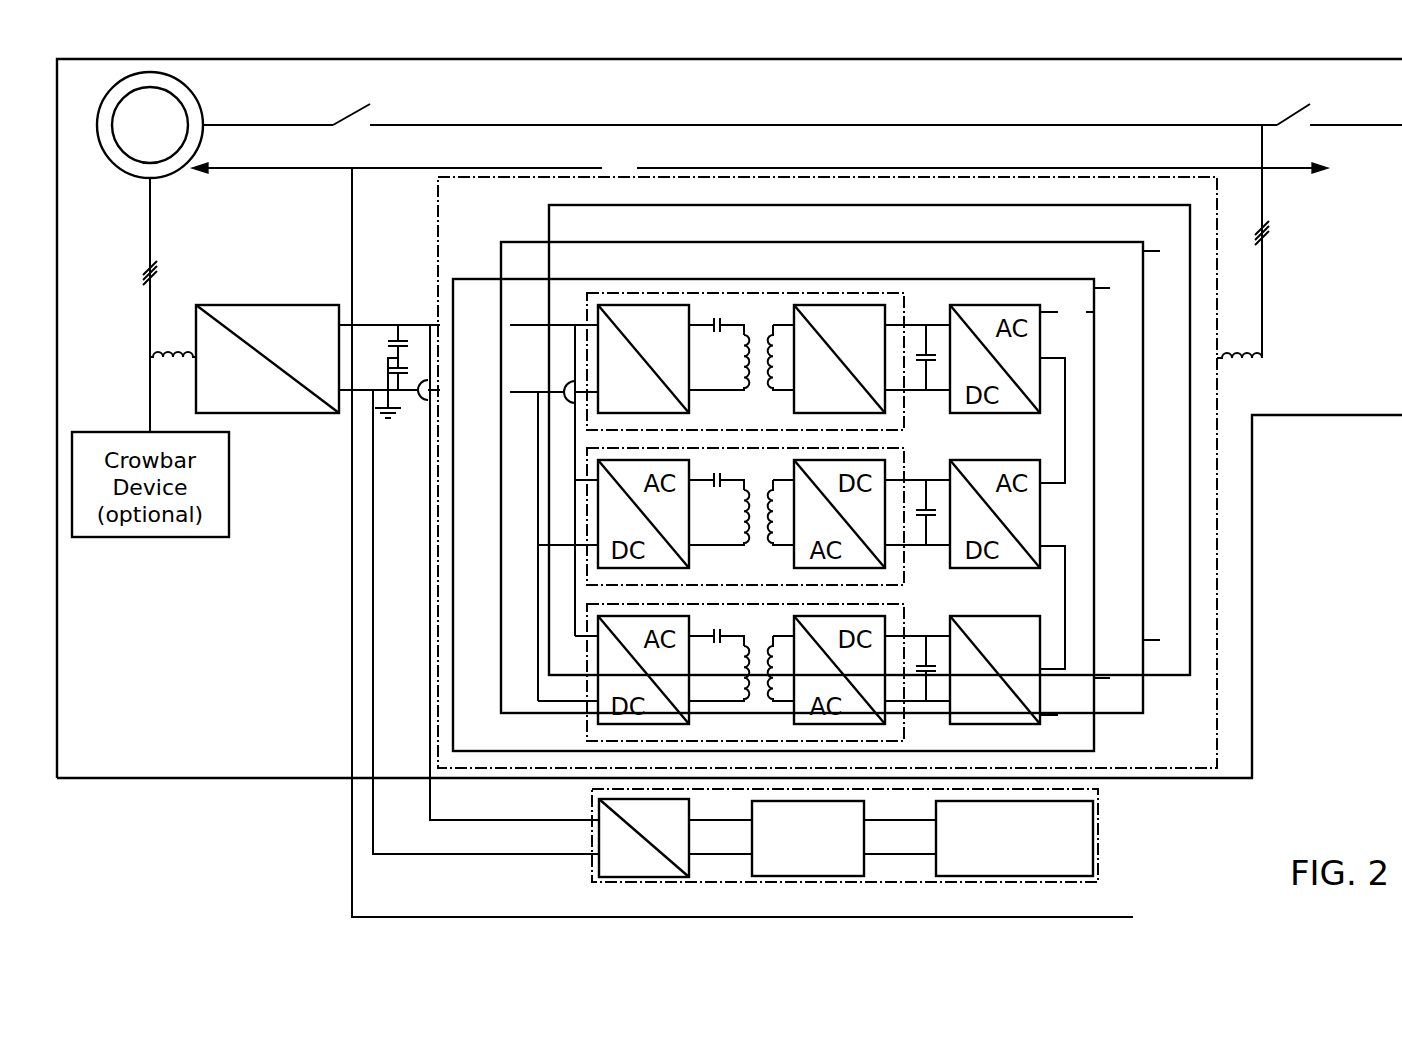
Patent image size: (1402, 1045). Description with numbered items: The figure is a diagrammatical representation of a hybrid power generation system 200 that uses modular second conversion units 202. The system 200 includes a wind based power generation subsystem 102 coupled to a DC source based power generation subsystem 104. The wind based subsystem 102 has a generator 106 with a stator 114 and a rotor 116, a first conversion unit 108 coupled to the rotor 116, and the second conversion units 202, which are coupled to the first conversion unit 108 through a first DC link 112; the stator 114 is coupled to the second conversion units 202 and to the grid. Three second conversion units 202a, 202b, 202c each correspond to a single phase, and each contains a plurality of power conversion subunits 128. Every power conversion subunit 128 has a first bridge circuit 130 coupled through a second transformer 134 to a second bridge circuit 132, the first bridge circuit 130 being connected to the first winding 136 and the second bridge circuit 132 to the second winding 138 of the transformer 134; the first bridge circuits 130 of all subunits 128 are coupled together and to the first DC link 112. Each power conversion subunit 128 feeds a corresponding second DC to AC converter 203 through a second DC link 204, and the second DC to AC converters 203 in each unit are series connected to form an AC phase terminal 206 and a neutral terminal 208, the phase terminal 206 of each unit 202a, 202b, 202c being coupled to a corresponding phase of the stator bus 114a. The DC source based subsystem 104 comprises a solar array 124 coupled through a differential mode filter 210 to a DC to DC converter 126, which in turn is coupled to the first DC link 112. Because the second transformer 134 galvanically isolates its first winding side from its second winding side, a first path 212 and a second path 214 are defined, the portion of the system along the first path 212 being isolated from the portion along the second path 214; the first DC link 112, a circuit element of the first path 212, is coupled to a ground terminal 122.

The wind based power generation subsystem 102 is at (1252, 520).
The DC source based power generation subsystem 104 is at (1100, 840).
The generator 106 is at (107, 173).
The first conversion unit 108 is at (269, 305).
The first DC link 112 is at (398, 335).
The stator 114 is at (203, 97).
The stator bus 114a is at (735, 125).
The rotor 116 is at (189, 132).
The ground terminal 122 is at (390, 425).
The solar array 124 is at (1013, 877).
The DC to DC converter 126 is at (643, 878).
The power conversion subunit 128 is at (587, 672).
The first bridge circuit 130 is at (646, 305).
The second bridge circuit 132 is at (839, 305).
The second transformer 134 is at (742, 333).
The first winding 136 is at (744, 360).
The second winding 138 is at (768, 362).
The hybrid power generation system 200 is at (1292, 735).
The second conversion unit 202 is at (438, 220).
The second conversion unit 202a is at (1097, 738).
The second conversion unit 202b is at (1128, 716).
The second conversion unit 202c is at (1190, 398).
The second DC to AC converter 203 is at (985, 615).
The second DC link 204 is at (928, 346).
The AC phase terminal 206 is at (1185, 255).
The neutral terminal 208 is at (1180, 646).
The differential mode filter 210 is at (805, 877).
The first path 212 is at (277, 173).
The second path 214 is at (812, 168).